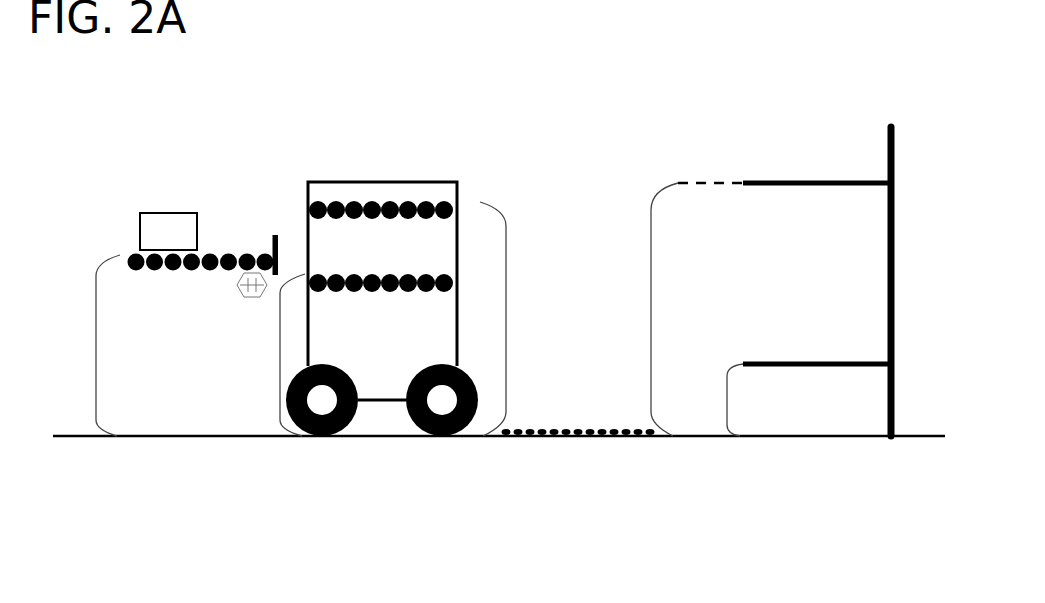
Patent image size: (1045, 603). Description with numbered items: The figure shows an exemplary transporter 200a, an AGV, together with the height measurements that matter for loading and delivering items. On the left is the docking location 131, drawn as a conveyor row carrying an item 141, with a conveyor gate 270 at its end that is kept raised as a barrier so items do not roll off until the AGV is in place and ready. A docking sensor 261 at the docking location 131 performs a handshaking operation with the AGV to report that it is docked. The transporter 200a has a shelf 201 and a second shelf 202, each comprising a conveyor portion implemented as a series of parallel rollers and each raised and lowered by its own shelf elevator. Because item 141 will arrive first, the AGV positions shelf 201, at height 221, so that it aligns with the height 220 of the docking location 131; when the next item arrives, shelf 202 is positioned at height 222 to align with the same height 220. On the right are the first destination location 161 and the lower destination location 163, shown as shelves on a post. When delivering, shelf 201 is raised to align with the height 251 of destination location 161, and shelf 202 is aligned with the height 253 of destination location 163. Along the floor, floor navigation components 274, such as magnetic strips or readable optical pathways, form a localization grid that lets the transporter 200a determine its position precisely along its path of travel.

The docking location 131 is at (225, 207).
The item 141 is at (185, 244).
The conveyor gate 270 is at (275, 233).
The docking sensor 261 is at (238, 288).
The height of docking location 220 is at (96, 347).
The height of shelf 202 222 is at (280, 355).
The height of shelf 201 221 is at (506, 318).
The height of destination location 161 251 is at (651, 310).
The height of destination location 163 253 is at (727, 400).
The transporter 200a is at (392, 181).
The shelf 201 is at (336, 203).
The second shelf 202 is at (372, 291).
The floor navigation components 274 is at (590, 429).
The first destination location 161 is at (819, 115).
The destination location 163 is at (834, 340).